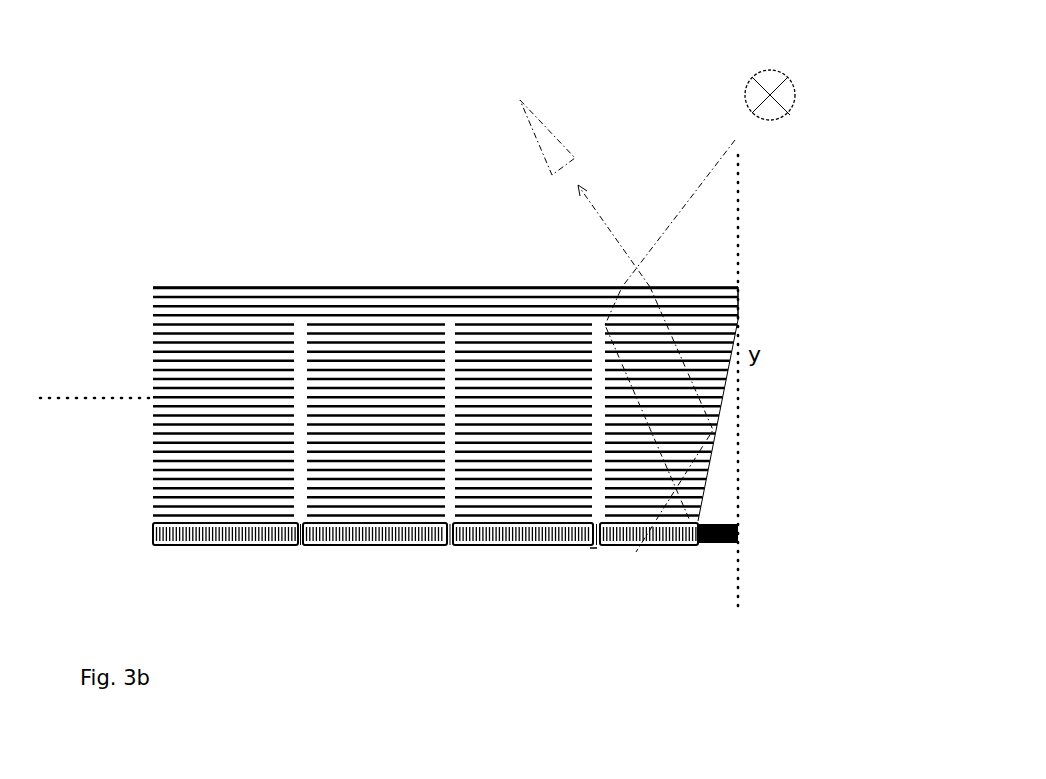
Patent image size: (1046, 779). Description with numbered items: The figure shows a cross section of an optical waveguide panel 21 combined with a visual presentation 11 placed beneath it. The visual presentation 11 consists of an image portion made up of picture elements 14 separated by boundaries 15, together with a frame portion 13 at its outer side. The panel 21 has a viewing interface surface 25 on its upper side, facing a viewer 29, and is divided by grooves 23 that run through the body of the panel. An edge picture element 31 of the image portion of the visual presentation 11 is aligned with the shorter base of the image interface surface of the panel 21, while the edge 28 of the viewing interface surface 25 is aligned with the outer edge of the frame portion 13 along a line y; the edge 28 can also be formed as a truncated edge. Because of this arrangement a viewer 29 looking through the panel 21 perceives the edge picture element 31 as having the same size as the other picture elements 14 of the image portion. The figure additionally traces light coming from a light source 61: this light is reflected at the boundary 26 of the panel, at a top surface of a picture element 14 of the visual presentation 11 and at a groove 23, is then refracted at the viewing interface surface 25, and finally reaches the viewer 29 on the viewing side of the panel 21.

The visual presentation 11 is at (138, 526).
The frame portion 13 is at (745, 518).
The picture element 14 is at (150, 553).
The boundary 15 is at (292, 555).
The optical waveguide panel 21 is at (82, 328).
The groove 23 is at (311, 456).
The viewing interface surface 25 is at (210, 280).
The boundary 26 is at (725, 436).
The edge 28 is at (752, 283).
The viewer 29 is at (511, 100).
The edge picture element 31 is at (585, 560).
The light source 61 is at (808, 87).